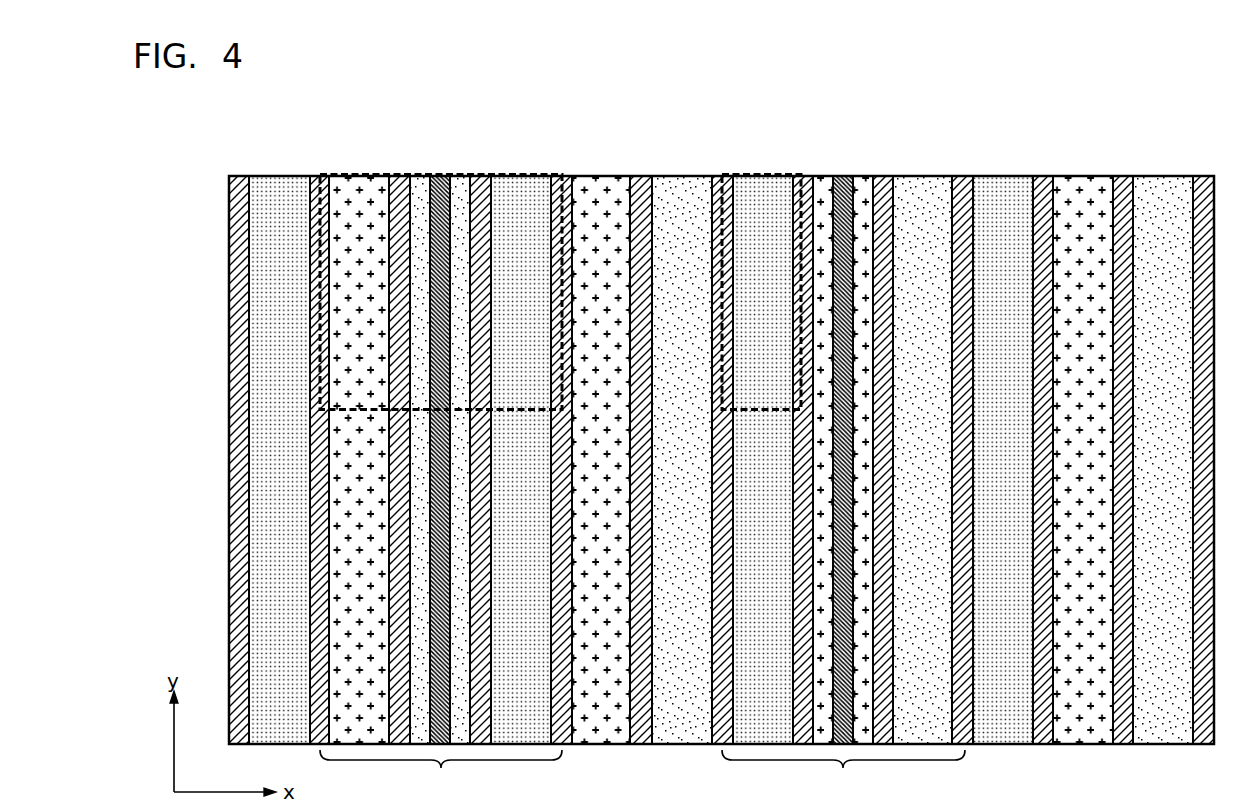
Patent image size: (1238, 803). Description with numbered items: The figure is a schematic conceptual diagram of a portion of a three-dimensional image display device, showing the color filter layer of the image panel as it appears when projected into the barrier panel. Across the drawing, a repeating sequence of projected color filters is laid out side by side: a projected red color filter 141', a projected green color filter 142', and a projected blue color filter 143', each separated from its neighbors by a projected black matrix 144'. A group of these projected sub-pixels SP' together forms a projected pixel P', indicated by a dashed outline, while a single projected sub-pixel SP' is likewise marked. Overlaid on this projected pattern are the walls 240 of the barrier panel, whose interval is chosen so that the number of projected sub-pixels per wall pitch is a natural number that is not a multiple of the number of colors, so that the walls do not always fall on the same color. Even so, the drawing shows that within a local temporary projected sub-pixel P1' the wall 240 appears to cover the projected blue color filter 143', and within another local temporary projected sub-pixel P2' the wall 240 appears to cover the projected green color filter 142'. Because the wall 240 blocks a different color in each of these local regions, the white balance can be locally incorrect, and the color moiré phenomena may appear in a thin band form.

The wall 240 is at (442, 192).
The projected red color filter 141' is at (1003, 423).
The projected green color filter 142' is at (1083, 423).
The projected blue color filter 143' is at (1162, 423).
The projected black matrix 144' is at (1204, 423).
The projected pixel P' is at (441, 256).
The projected sub-pixel SP' is at (761, 256).
The local temporary projected sub-pixel P1' is at (441, 770).
The local temporary projected sub-pixel P2' is at (843, 770).